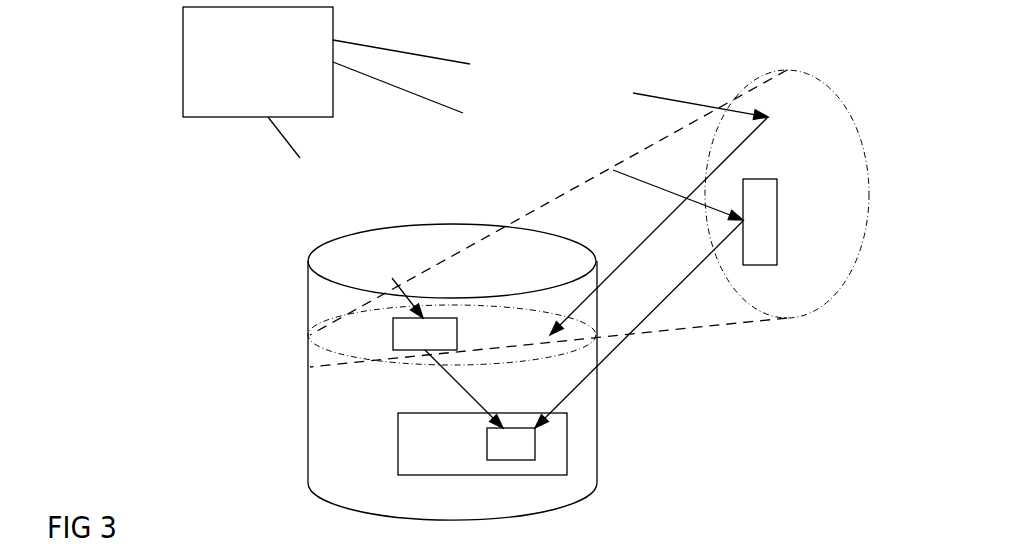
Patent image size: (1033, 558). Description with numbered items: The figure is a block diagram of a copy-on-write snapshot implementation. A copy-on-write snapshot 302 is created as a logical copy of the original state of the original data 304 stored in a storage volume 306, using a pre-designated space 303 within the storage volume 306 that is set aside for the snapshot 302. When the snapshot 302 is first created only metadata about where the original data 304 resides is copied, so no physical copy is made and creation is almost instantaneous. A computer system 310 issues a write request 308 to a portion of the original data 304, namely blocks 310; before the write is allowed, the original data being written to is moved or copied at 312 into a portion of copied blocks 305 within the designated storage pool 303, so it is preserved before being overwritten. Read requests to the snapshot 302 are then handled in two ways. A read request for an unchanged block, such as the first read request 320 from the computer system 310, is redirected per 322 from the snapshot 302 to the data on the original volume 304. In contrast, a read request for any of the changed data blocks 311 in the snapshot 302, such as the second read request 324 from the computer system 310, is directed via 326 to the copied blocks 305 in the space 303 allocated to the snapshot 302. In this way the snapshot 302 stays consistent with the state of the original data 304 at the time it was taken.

The copy-on-write snapshot 302 is at (757, 82).
The pre-designated space 303 is at (487, 475).
The original data 304 is at (388, 364).
The copied blocks 305 is at (487, 445).
The storage volume 306 is at (308, 450).
The write request 308 is at (293, 150).
The computer system 310 is at (183, 96).
The changed data blocks in the snapshot 311 is at (777, 225).
The copy of original data to snapshot space 312 is at (455, 381).
The Read Request (1) 320 is at (445, 60).
The redirection to original volume 322 is at (652, 233).
The Read Request (2) 324 is at (447, 107).
The direction to copied blocks 326 is at (605, 357).